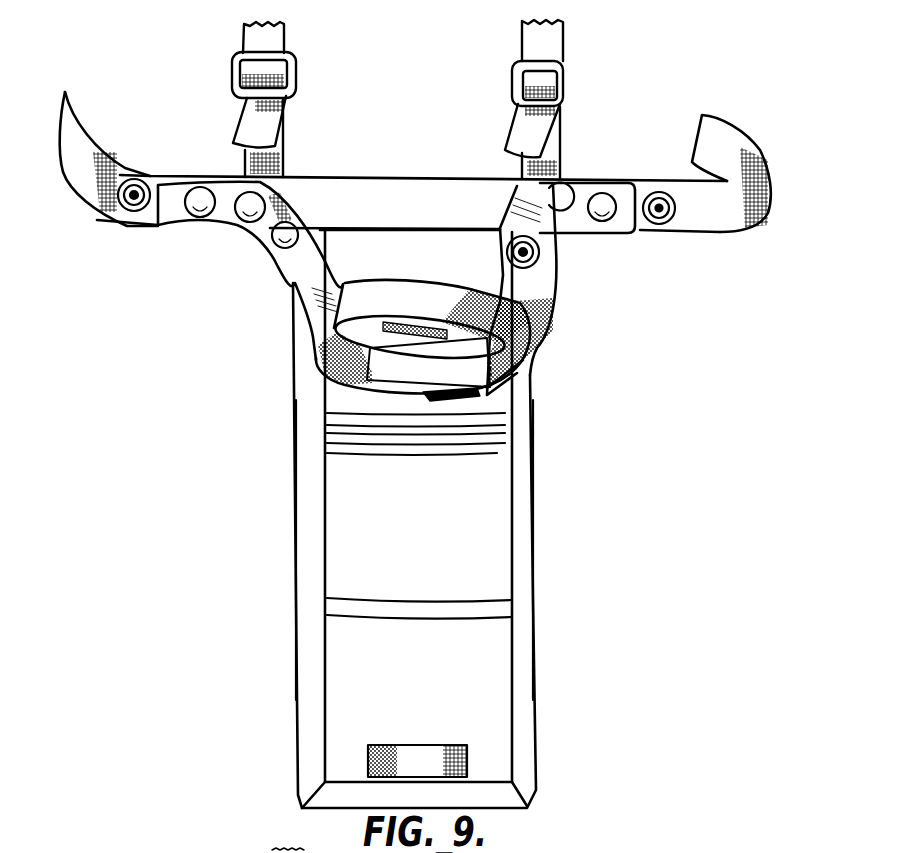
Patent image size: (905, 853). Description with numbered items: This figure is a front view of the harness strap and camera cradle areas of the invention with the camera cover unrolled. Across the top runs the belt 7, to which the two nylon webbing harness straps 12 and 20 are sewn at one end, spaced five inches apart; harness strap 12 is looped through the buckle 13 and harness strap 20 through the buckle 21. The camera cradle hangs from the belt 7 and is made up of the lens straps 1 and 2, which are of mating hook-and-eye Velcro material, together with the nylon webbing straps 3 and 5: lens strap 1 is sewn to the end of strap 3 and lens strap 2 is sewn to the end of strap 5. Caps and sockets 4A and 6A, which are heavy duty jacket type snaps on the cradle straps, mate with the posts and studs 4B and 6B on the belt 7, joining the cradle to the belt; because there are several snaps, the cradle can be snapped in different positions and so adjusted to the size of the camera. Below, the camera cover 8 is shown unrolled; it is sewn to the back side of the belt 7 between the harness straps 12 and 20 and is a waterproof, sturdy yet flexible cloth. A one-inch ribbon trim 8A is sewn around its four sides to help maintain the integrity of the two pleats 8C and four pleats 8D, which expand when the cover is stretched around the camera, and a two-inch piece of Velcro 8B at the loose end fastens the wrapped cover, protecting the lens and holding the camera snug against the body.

The lens strap 1 is at (350, 308).
The lens strap 2 is at (536, 339).
The strap 3 is at (307, 275).
The caps and sockets 4A is at (277, 235).
The posts and studs 4B is at (137, 210).
The strap 5 is at (538, 295).
The caps and sockets 6A is at (562, 215).
The posts and studs 6B is at (658, 218).
The belt 7 is at (91, 163).
The camera cover 8 is at (493, 499).
The ribbon trim 8A is at (307, 532).
The Velcro piece 8B is at (438, 765).
The pleats 8C is at (497, 605).
The pleats 8D is at (497, 448).
The harness strap 12 is at (548, 34).
The buckle 13 is at (560, 75).
The harness strap 20 is at (268, 34).
The buckle 21 is at (294, 72).